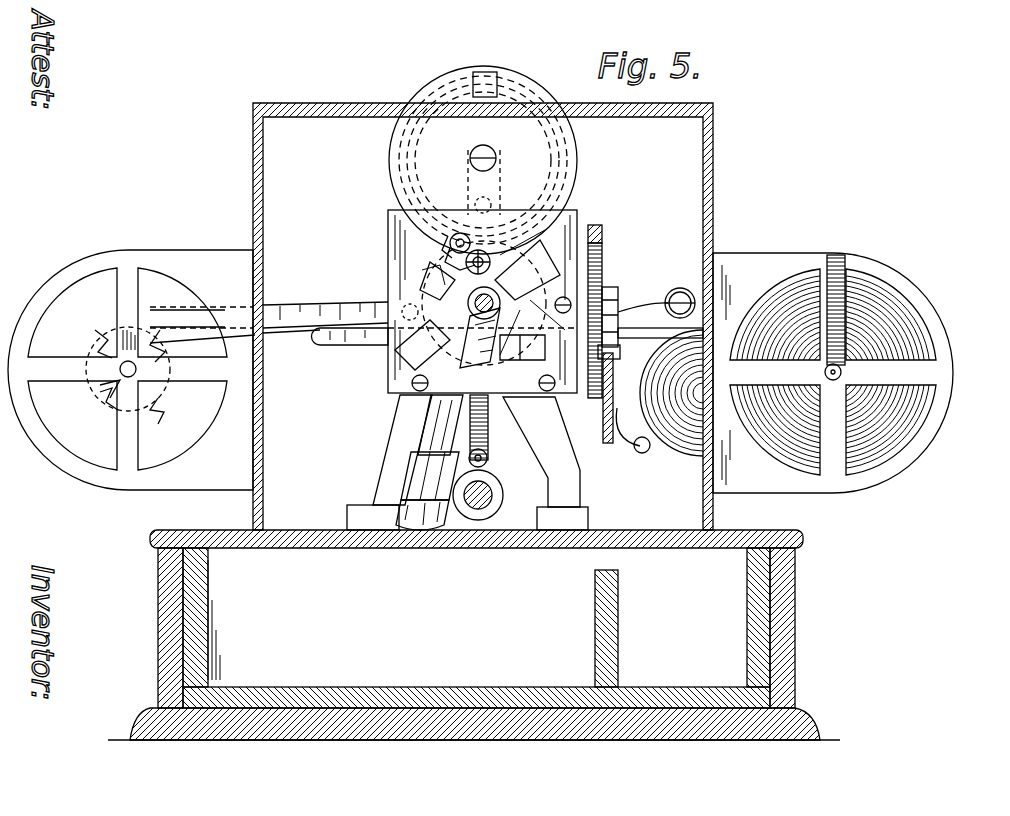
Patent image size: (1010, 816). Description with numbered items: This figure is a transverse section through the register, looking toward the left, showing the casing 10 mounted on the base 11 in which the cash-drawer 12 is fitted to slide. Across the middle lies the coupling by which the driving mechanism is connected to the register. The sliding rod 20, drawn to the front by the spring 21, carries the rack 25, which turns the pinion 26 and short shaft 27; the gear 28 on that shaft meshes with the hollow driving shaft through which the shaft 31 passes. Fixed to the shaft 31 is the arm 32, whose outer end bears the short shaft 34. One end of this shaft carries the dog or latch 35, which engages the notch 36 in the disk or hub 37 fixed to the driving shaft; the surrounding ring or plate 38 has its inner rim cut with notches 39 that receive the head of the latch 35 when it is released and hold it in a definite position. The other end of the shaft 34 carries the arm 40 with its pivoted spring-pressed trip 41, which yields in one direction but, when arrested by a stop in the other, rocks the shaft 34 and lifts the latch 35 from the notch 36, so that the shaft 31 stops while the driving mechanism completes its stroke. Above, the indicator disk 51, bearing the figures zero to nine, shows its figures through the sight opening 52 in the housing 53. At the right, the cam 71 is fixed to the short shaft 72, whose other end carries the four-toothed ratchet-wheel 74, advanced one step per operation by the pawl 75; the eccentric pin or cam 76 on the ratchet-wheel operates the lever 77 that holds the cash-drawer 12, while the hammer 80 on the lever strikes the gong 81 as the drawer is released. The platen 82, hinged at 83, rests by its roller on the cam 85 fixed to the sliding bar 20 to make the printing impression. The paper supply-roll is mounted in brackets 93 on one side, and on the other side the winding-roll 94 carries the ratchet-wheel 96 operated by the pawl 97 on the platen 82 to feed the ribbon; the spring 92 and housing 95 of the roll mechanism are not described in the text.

The casing 10 is at (253, 163).
The base 11 is at (795, 580).
The cash-drawer 12 is at (470, 687).
The sliding rod or bar 20 is at (503, 497).
The spring 21 is at (488, 460).
The rack 25 is at (455, 495).
The pinion 26 is at (455, 476).
The short shaft 27 is at (445, 424).
The gear 28 is at (422, 345).
The shaft 31 is at (494, 314).
The arm 32 is at (465, 273).
The short shaft 34 is at (495, 232).
The dog or latch 35 is at (530, 252).
The notch 36 is at (464, 330).
The disk or hub 37 is at (426, 280).
The ring or plate 38 is at (577, 212).
The notches 39 is at (489, 316).
The arm 40 is at (450, 243).
The trip 41 is at (458, 235).
The disk 51 is at (485, 162).
The sight opening 52 is at (500, 74).
The housing 53 is at (440, 76).
The cam 71 is at (530, 335).
The short shaft 72 is at (618, 300).
The ratchet-wheel 74 is at (596, 280).
The pawl 75 is at (602, 232).
The eccentric pin or cam 76 is at (620, 360).
The lever 77 is at (608, 444).
The hammer 80 is at (648, 450).
The gong 81 is at (700, 393).
The platen 82 is at (352, 338).
The hinge 83 is at (682, 290).
The cam 85 is at (488, 437).
The spring 92 is at (888, 300).
The brackets 93 is at (833, 373).
The winding-roll 94 is at (115, 388).
The wheel housing 95 is at (130, 370).
The ratchet-wheel 96 is at (108, 346).
The pawl 97 is at (297, 312).